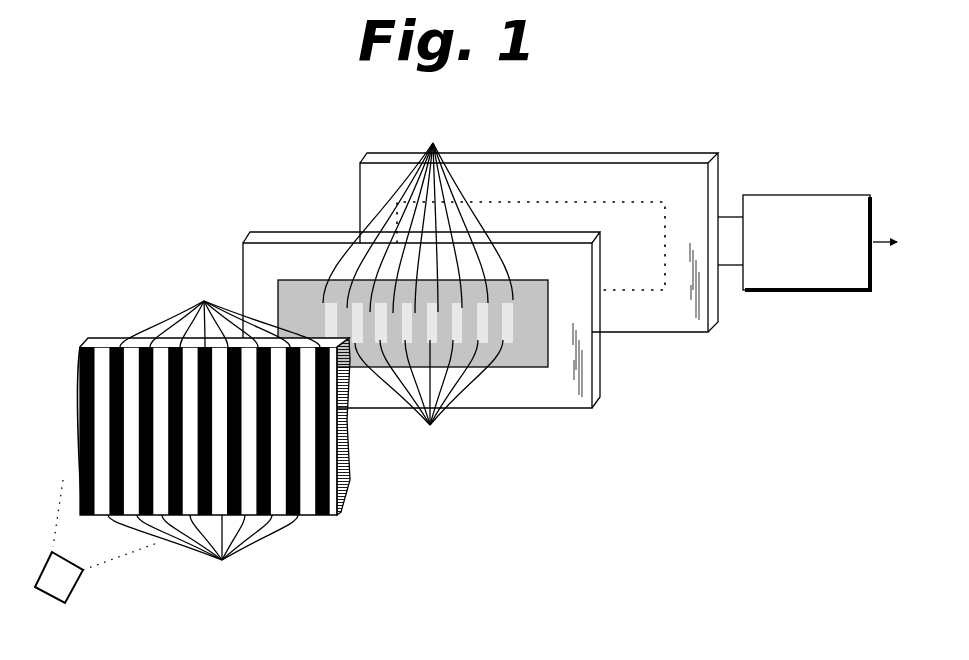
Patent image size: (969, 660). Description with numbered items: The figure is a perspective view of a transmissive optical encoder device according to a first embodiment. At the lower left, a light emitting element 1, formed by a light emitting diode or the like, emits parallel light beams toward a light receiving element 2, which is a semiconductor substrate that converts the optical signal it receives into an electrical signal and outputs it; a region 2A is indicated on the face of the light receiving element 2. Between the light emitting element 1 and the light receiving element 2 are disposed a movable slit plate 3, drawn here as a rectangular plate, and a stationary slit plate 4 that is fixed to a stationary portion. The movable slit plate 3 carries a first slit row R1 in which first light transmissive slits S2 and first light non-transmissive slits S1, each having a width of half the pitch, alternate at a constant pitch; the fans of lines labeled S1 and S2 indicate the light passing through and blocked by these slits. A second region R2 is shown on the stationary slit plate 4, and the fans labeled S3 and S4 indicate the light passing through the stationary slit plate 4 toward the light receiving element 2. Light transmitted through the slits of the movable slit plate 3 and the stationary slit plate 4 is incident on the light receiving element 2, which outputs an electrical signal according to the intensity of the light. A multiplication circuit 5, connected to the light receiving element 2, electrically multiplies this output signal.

The light emitting element 1 is at (73, 588).
The light receiving element 2 is at (668, 148).
The light receiving region 2A is at (652, 277).
The movable slit plate 3 is at (78, 340).
The stationary slit plate 4 is at (259, 229).
The multiplication circuit 5 is at (775, 292).
The first slit row R1 is at (78, 395).
The second region R2 is at (520, 333).
The first light non-transmissive slits S1 is at (220, 309).
The first light transmissive slits S2 is at (203, 554).
The third light flux convergence S3 is at (418, 214).
The fourth light flux convergence S4 is at (429, 398).